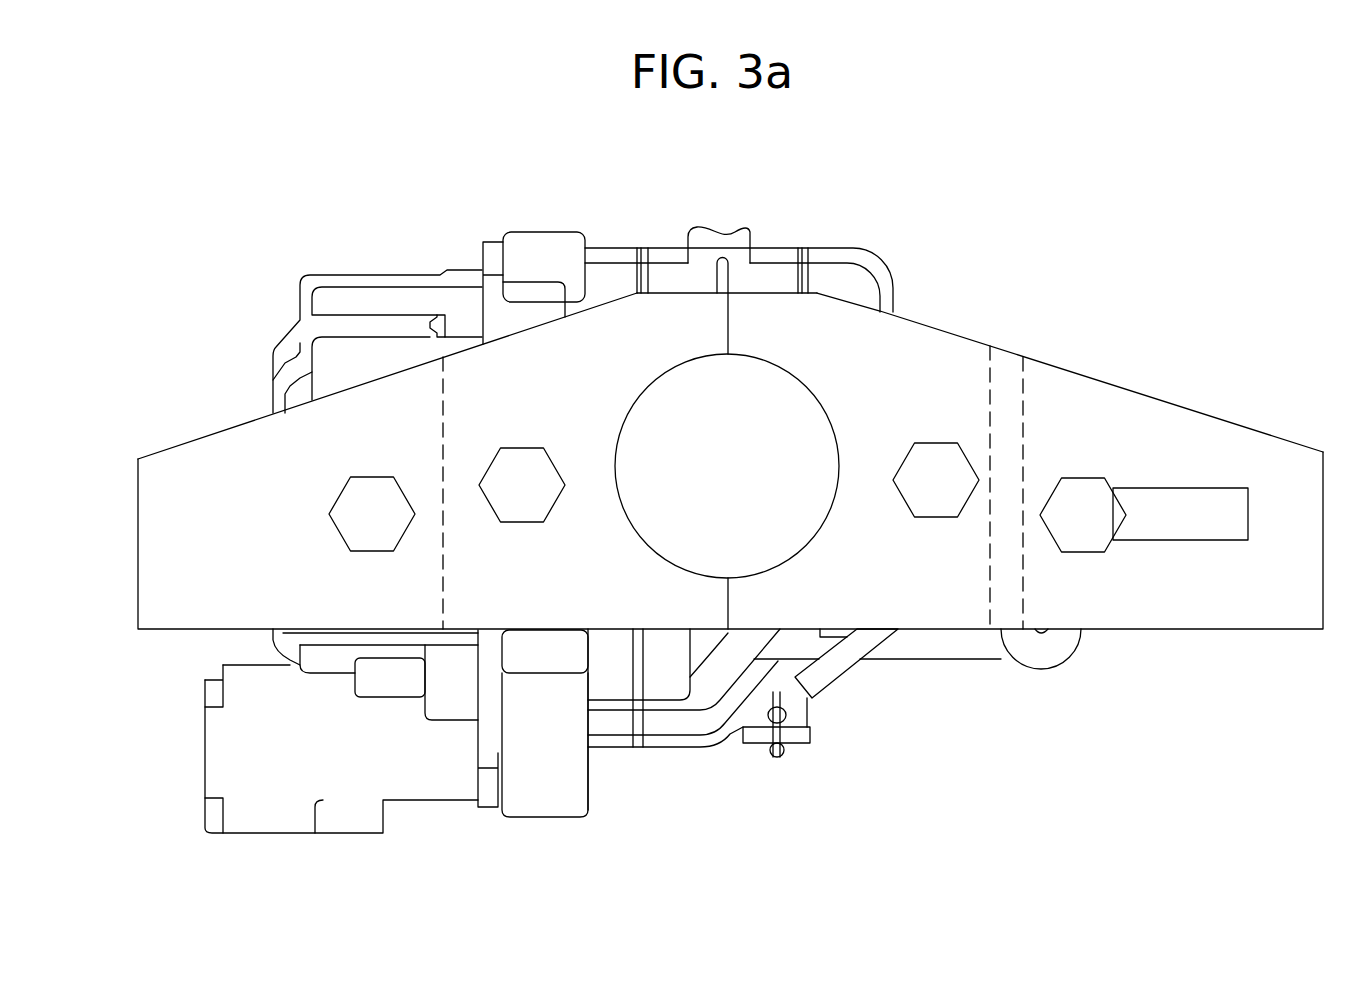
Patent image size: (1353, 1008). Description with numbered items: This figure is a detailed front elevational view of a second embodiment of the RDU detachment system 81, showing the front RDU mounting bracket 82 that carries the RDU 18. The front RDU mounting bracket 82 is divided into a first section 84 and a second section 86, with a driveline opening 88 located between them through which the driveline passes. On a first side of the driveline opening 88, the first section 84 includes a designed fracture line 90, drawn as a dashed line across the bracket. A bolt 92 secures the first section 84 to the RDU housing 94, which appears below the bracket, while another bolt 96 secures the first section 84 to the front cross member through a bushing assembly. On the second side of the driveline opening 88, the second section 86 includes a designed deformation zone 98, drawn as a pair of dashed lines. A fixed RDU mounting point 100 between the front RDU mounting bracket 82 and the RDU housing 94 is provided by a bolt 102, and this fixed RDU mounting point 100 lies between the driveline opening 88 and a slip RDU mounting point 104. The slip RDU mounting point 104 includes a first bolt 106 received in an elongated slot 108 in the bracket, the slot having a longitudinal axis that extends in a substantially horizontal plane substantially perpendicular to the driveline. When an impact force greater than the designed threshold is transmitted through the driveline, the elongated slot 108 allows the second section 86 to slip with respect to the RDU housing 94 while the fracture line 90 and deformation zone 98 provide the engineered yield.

The RDU detachment system 81 is at (1208, 222).
The RDU 18 is at (555, 226).
The front RDU mounting bracket 82 is at (965, 317).
The first section 84 is at (240, 453).
The second section 86 is at (978, 357).
The driveline opening 88 is at (755, 353).
The designed fracture line 90 is at (442, 445).
The bolt 92 is at (528, 522).
The RDU housing 94 is at (612, 673).
The bolt 96 is at (329, 527).
The designed deformation zone 98 is at (1005, 597).
The fixed RDU mounting point 100 is at (925, 575).
The bolt 102 is at (937, 470).
The slip RDU mounting point 104 is at (1095, 573).
The first bolt 106 is at (1085, 500).
The elongated slot 108 is at (1180, 543).